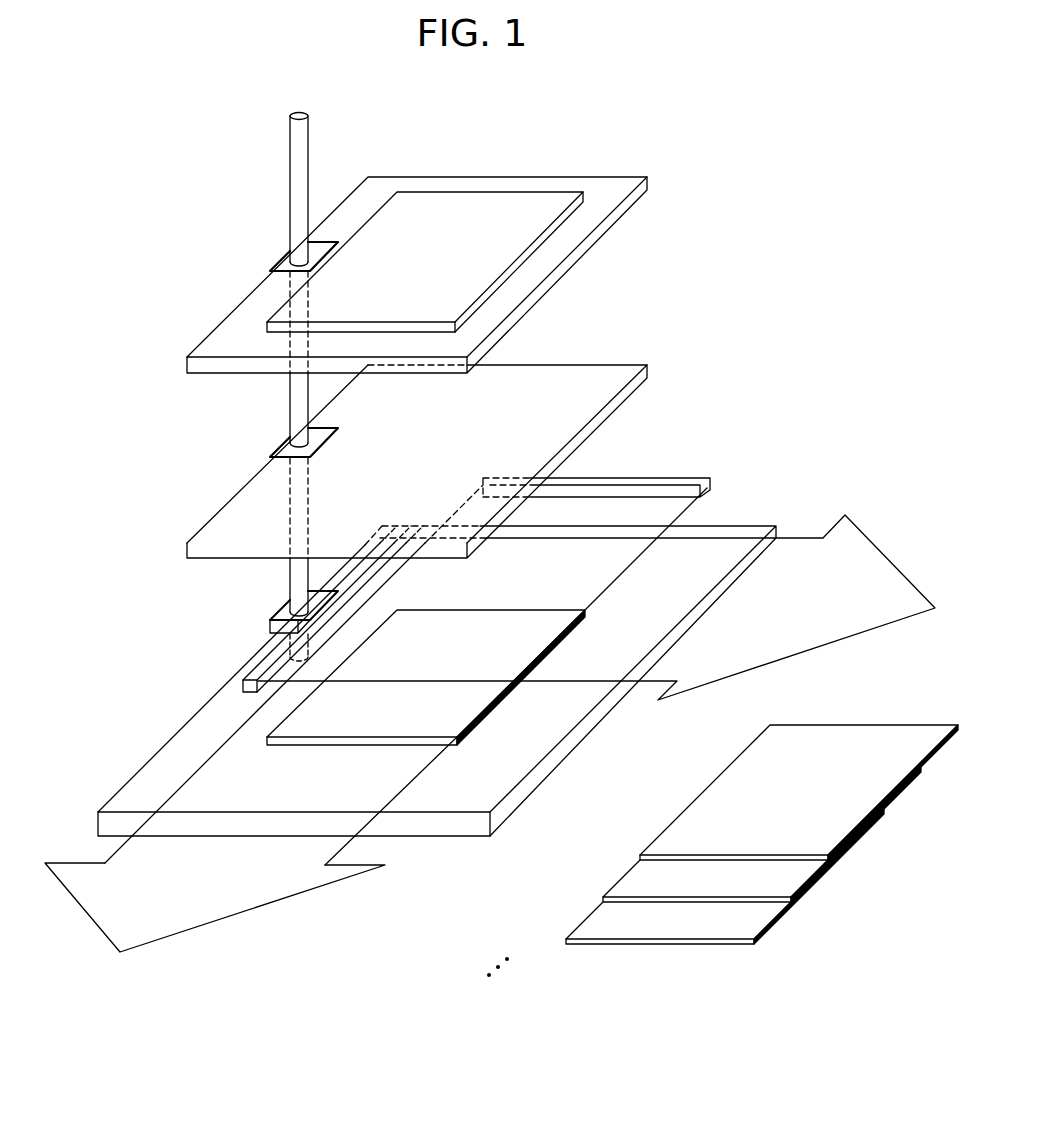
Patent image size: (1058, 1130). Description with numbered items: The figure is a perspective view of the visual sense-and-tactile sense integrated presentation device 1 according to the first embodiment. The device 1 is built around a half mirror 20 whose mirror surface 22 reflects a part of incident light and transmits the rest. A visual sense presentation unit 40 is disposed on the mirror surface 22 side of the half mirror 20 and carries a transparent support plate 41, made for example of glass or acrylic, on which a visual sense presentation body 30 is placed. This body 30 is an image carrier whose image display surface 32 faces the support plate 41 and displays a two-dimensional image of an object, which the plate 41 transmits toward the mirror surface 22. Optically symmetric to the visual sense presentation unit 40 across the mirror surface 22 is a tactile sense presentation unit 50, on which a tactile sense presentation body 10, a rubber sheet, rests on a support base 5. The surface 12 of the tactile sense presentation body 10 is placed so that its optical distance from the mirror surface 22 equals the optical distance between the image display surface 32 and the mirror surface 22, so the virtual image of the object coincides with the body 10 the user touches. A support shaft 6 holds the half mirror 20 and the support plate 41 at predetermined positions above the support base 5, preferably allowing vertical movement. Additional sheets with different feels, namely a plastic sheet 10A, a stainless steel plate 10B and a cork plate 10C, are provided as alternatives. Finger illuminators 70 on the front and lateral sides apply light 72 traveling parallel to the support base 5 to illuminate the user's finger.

The visual sense-and-tactile sense integrated presentation device 1 is at (118, 263).
The support base 5 is at (497, 826).
The support shaft 6 is at (290, 152).
The tactile sense presentation body 10 is at (540, 618).
The plastic sheet 10A is at (676, 836).
The stainless steel plate 10B is at (638, 877).
The cork plate 10C is at (601, 919).
The surface of the tactile sense presentation body 12 is at (489, 636).
The half mirror 20 is at (597, 428).
The mirror surface 22 is at (584, 388).
The visual sense presentation body 30 is at (430, 205).
The image display surface 32 is at (545, 246).
The visual sense presentation unit 40 is at (680, 167).
The support plate 41 is at (517, 182).
The tactile sense presentation unit 50 is at (504, 703).
The finger illuminator 70 is at (700, 482).
The light 72 is at (795, 550).